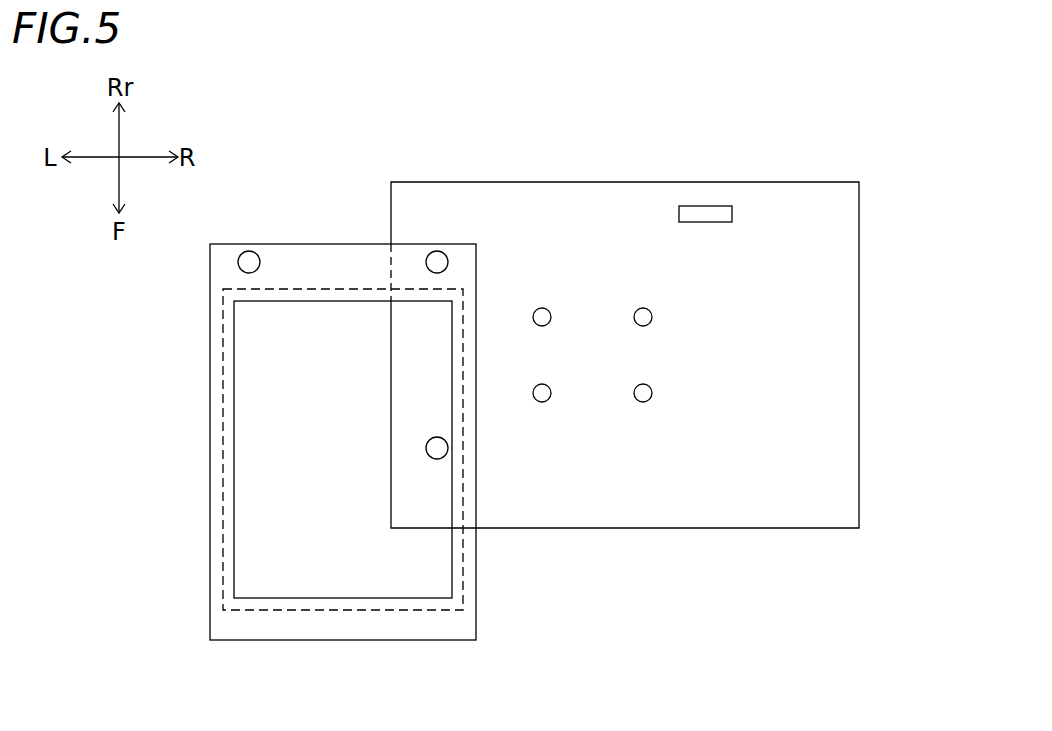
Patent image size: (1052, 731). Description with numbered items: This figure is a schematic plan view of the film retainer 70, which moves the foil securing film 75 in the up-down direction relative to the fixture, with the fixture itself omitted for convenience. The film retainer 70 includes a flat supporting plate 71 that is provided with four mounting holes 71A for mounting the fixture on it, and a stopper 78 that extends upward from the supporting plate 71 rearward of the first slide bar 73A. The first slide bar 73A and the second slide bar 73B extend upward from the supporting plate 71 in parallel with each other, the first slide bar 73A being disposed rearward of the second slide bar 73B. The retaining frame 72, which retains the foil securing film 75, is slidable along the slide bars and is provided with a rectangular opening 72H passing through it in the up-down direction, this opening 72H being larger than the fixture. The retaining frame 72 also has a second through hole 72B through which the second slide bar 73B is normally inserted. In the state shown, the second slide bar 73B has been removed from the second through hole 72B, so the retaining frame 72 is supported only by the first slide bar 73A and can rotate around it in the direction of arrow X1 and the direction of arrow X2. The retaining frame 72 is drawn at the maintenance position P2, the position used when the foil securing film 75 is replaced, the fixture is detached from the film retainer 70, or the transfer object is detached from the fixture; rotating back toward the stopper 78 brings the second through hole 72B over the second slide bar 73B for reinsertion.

The film retainer 70 is at (853, 146).
The supporting plate 71 is at (841, 282).
The mounting holes 71A is at (548, 387).
The retaining frame 72 is at (210, 353).
The second through hole 72B is at (254, 258).
The opening 72H is at (234, 506).
The first slide bar 73A is at (437, 251).
The second slide bar 73B is at (436, 459).
The foil securing film 75 is at (222, 431).
The stopper 78 is at (712, 206).
The maintenance position P2 is at (336, 228).
The arrow X1 is at (512, 646).
The arrow X2 is at (517, 658).